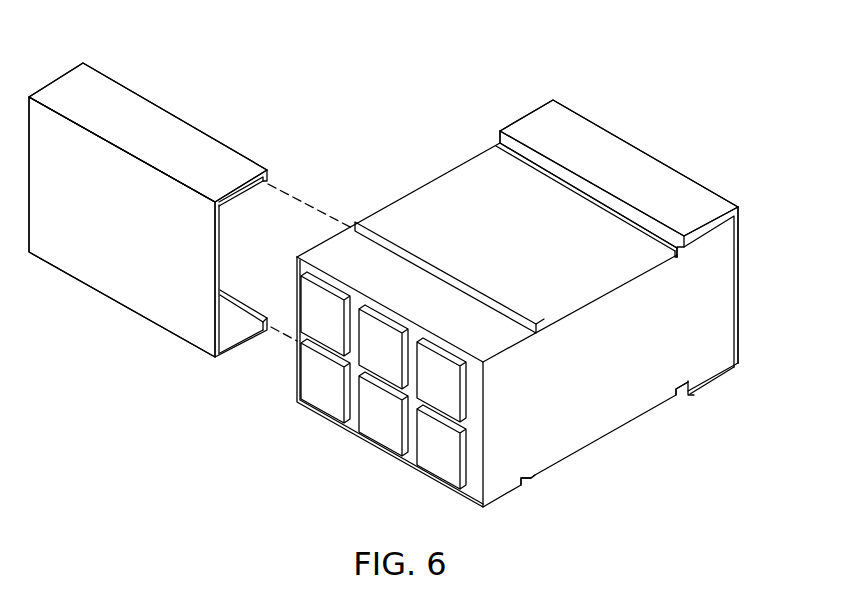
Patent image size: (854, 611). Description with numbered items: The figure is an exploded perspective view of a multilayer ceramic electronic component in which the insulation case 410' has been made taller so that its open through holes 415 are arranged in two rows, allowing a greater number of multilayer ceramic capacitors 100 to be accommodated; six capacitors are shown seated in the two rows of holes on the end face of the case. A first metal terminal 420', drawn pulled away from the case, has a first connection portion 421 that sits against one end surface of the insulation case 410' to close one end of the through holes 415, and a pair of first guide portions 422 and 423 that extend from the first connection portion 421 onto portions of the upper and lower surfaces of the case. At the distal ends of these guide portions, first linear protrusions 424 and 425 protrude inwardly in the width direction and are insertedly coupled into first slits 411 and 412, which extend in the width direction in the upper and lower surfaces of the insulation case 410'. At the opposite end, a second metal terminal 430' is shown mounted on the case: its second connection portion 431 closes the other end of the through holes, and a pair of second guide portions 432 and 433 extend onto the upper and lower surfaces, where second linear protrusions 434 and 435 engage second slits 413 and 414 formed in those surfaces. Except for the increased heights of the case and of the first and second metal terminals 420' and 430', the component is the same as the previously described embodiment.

The multilayer ceramic capacitor 100 is at (372, 449).
The insulation case 410' is at (492, 313).
The first slit 411 is at (352, 228).
The first slit 412 is at (532, 480).
The second slit 413 is at (675, 245).
The second slit 414 is at (681, 398).
The through hole 415 is at (328, 288).
The first metal terminal 420' is at (148, 217).
The first connection portion 421 is at (98, 160).
The first guide portion 422 is at (67, 90).
The first guide portion 423 is at (235, 352).
The first linear protrusion 424 is at (267, 182).
The first linear protrusion 425 is at (252, 323).
The second metal terminal 430' is at (619, 215).
The second connection portion 431 is at (738, 232).
The second guide portion 432 is at (535, 121).
The second guide portion 433 is at (738, 372).
The second linear protrusion 434 is at (690, 246).
The second linear protrusion 435 is at (690, 395).